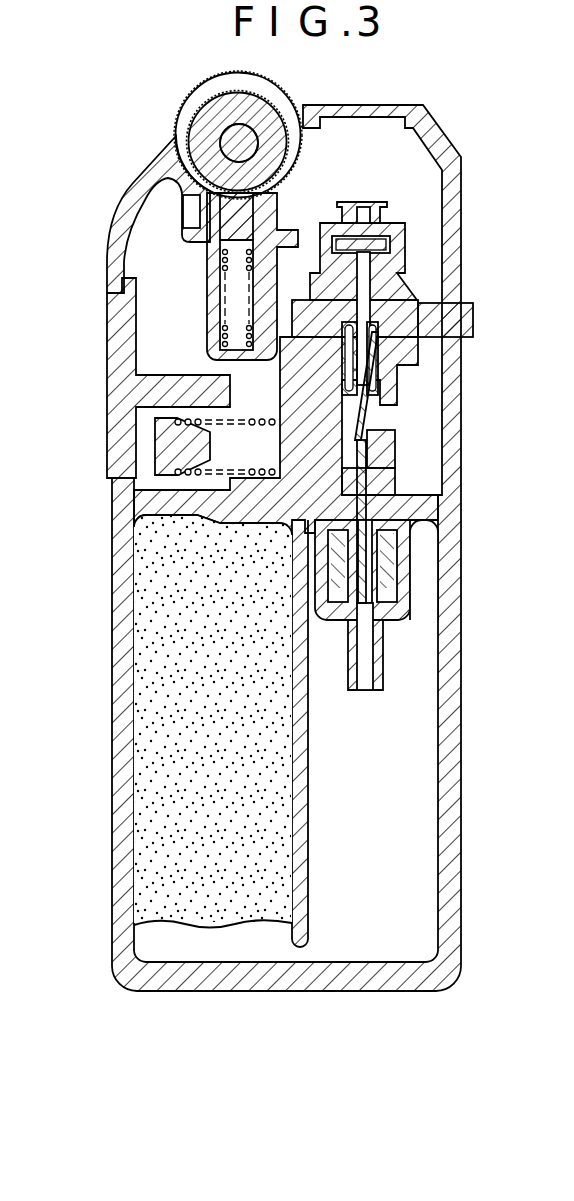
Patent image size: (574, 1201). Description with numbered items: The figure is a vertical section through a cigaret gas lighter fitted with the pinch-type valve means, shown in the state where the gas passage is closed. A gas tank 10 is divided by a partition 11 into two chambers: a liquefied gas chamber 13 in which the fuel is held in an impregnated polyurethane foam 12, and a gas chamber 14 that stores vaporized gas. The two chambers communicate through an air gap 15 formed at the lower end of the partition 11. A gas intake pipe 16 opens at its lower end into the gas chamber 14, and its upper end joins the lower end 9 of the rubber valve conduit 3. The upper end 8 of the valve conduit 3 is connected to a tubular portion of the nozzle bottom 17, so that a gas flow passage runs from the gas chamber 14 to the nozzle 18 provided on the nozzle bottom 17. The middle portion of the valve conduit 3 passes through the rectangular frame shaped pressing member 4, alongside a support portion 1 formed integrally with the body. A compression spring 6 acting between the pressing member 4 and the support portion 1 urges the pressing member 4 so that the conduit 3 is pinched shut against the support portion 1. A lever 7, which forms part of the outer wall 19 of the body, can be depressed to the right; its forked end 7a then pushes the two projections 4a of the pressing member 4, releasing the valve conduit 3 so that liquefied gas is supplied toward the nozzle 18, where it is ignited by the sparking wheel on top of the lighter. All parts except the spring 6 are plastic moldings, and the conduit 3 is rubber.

The support portion 1 is at (288, 532).
The valve conduit 3 is at (378, 478).
The pressing member 4 is at (375, 428).
The projections 4a is at (380, 398).
The compression spring 6 is at (198, 473).
The lever 7 is at (107, 360).
The forked end 7a is at (246, 396).
The upper end of valve conduit 8 is at (375, 341).
The lower end of valve conduit 9 is at (383, 580).
The gas tank 10 is at (370, 990).
The partition 11 is at (300, 940).
The polyurethane foam 12 is at (152, 712).
The liquefied gas chamber 13 is at (238, 838).
The gas chamber 14 is at (394, 838).
The air gap 15 is at (375, 448).
The gas intake pipe 16 is at (384, 663).
The nozzle bottom 17 is at (365, 335).
The nozzle 18 is at (378, 200).
The outer wall 19 is at (107, 266).